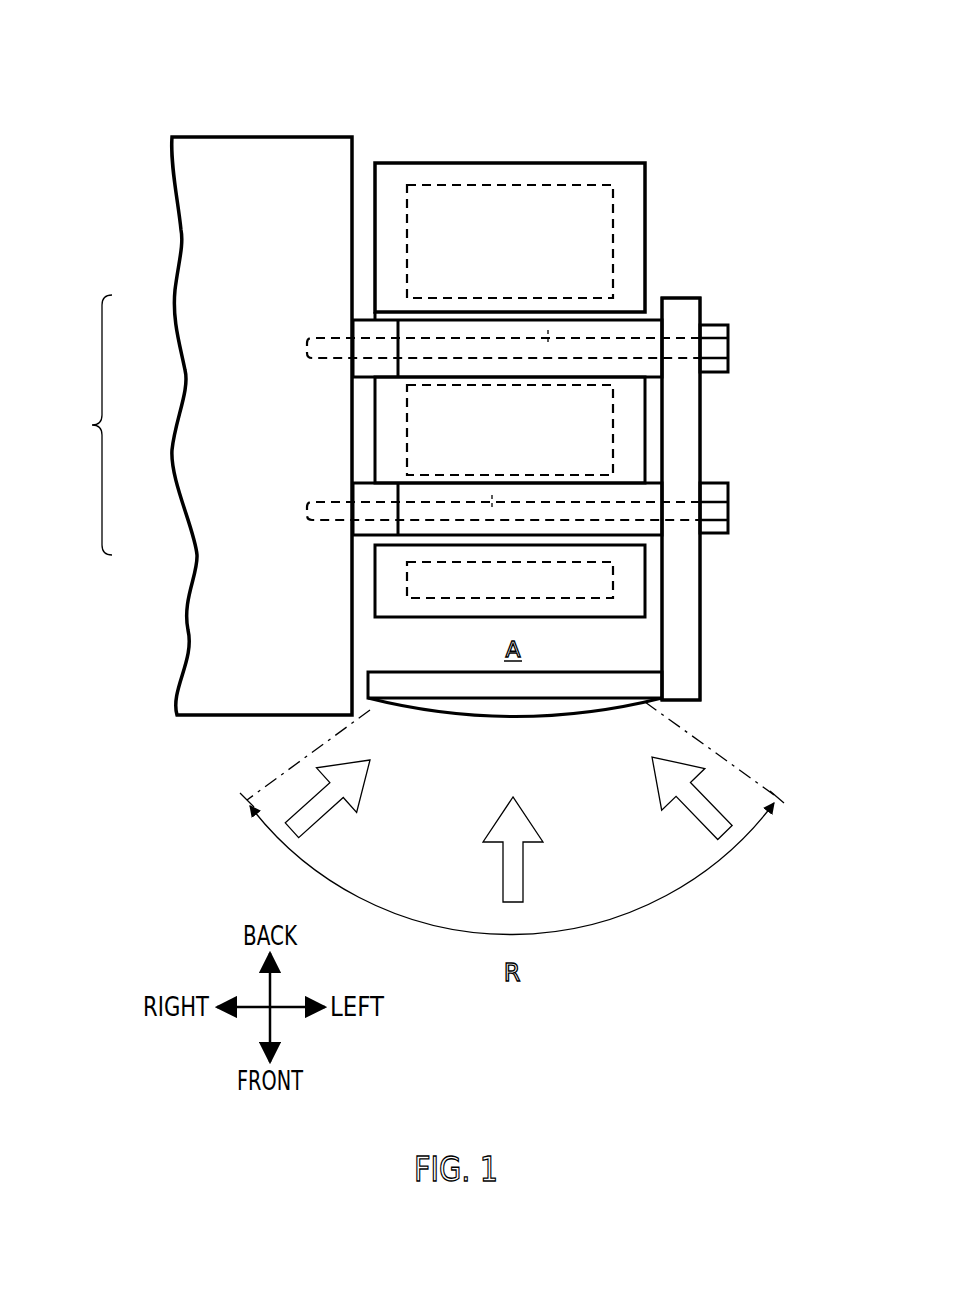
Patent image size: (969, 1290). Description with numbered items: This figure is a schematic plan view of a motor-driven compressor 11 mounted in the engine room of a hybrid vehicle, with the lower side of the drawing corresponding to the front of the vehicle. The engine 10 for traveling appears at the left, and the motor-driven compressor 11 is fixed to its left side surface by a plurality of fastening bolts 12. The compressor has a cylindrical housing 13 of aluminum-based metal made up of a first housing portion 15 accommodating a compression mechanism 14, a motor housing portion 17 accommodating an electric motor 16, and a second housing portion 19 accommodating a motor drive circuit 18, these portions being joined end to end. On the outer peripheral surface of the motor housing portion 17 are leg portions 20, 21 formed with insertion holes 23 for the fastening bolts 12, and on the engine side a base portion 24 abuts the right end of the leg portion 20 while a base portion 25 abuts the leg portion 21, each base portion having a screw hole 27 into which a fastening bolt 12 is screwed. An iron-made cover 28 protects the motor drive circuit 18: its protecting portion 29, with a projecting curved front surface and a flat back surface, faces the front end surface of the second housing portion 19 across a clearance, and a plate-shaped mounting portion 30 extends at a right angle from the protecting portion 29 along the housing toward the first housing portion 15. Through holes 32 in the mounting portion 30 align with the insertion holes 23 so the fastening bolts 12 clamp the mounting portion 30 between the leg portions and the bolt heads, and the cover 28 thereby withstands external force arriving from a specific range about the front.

The engine 10 is at (230, 132).
The motor-driven compressor 11 is at (670, 140).
The fastening bolt 12 is at (728, 348).
The housing 13 is at (84, 425).
The compression mechanism 14 is at (613, 228).
The first housing portion 15 is at (373, 263).
The electric motor 16 is at (613, 429).
The motor housing portion 17 is at (375, 425).
The motor drive circuit 18 is at (613, 578).
The second housing portion 19 is at (375, 578).
The leg portion 20 is at (580, 310).
The leg portion 21 is at (542, 482).
The insertion hole 23 is at (550, 305).
The base portion 24 is at (388, 319).
The base portion 25 is at (388, 482).
The screw hole 27 is at (352, 338).
The cover 28 is at (487, 722).
The protecting portion 29 is at (555, 716).
The mounting portion 30 is at (700, 611).
The through hole 32 is at (688, 333).